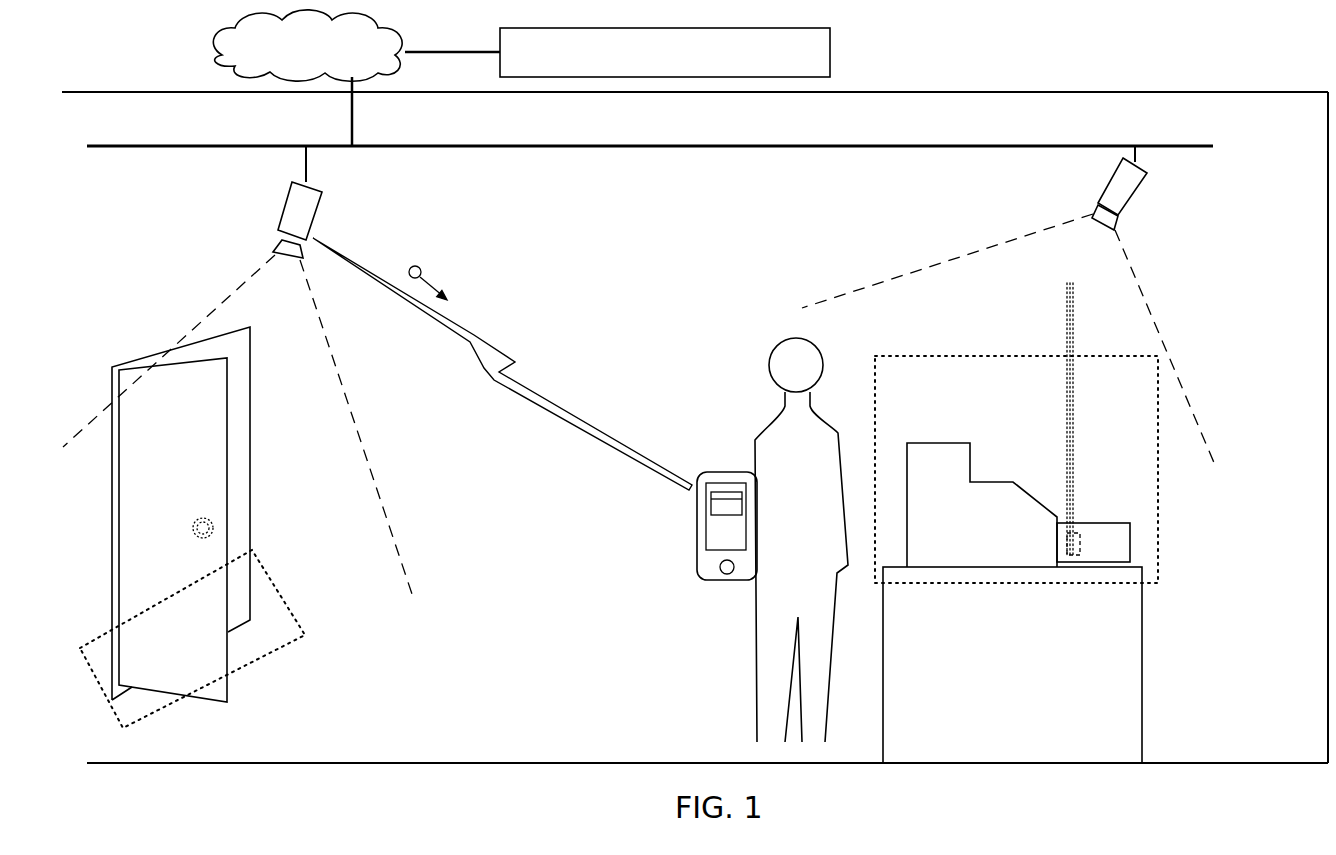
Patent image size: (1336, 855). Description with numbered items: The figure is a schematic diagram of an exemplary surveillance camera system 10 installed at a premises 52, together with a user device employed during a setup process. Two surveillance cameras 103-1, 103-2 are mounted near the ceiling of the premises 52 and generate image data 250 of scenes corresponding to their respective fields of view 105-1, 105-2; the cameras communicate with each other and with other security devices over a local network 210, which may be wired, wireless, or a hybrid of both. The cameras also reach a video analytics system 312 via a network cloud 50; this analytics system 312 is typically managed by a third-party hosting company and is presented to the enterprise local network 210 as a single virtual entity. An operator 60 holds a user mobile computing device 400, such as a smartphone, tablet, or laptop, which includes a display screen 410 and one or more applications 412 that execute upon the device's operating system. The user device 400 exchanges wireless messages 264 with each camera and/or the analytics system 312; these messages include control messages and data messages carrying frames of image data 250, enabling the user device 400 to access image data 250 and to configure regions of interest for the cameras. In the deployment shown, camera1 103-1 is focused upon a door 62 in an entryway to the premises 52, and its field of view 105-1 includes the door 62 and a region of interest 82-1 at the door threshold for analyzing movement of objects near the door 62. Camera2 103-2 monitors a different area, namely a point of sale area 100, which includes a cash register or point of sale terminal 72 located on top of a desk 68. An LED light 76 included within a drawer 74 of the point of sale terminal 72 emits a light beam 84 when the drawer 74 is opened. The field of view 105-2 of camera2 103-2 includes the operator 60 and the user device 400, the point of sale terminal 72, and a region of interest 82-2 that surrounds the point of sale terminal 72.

The surveillance camera system 10 is at (293, 737).
The network cloud 50 is at (356, 45).
The premises 52 is at (1033, 91).
The operator 60 is at (767, 430).
The door 62 is at (130, 510).
The desk 68 is at (1142, 670).
The point of sale terminal 72 is at (953, 443).
The drawer 74 is at (1120, 545).
The LED light 76 is at (1082, 537).
The region of interest 82-1 is at (283, 652).
The region of interest 82-2 is at (902, 352).
The light beam 84 is at (1052, 354).
The point of sale area 100 is at (823, 226).
The surveillance camera 103-1 is at (285, 212).
The surveillance camera 103-2 is at (1138, 193).
The field of view 105-1 is at (372, 460).
The field of view 105-2 is at (1140, 293).
The local network 210 is at (540, 146).
The image data 250 is at (425, 267).
The wireless messages 264 is at (495, 338).
The video analytics system 312 is at (665, 52).
The user mobile computing device 400 is at (694, 499).
The display screen 410 is at (727, 527).
The application 412 is at (720, 497).